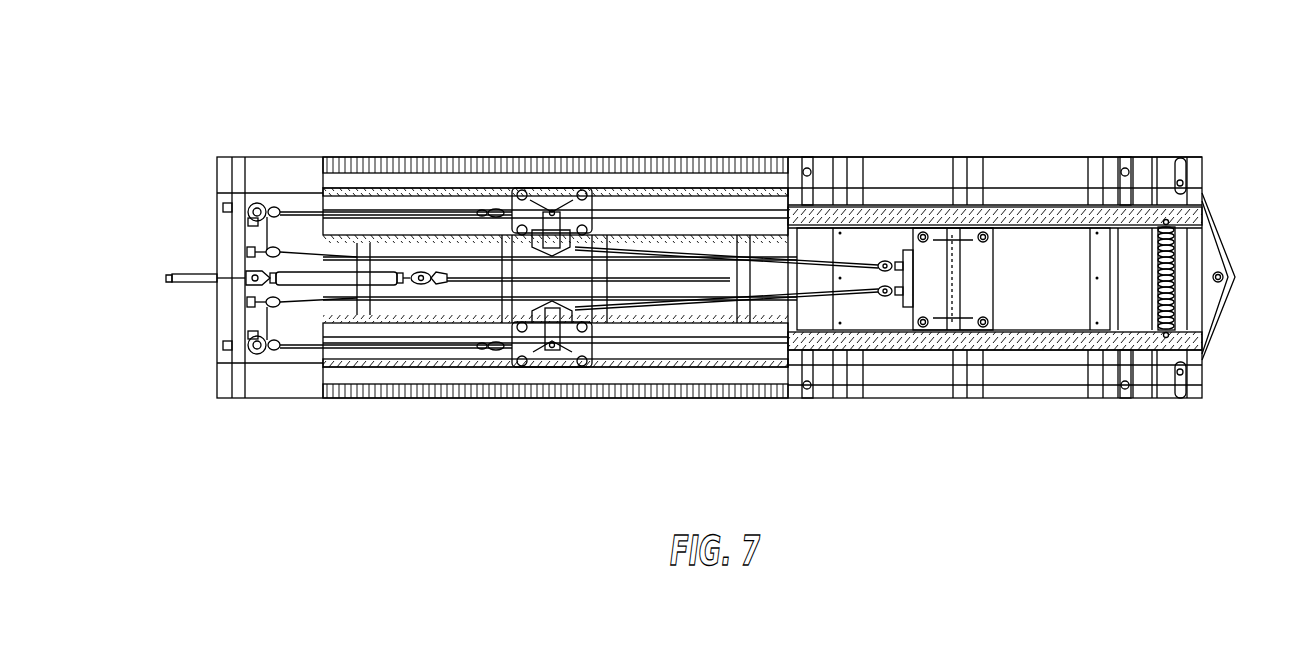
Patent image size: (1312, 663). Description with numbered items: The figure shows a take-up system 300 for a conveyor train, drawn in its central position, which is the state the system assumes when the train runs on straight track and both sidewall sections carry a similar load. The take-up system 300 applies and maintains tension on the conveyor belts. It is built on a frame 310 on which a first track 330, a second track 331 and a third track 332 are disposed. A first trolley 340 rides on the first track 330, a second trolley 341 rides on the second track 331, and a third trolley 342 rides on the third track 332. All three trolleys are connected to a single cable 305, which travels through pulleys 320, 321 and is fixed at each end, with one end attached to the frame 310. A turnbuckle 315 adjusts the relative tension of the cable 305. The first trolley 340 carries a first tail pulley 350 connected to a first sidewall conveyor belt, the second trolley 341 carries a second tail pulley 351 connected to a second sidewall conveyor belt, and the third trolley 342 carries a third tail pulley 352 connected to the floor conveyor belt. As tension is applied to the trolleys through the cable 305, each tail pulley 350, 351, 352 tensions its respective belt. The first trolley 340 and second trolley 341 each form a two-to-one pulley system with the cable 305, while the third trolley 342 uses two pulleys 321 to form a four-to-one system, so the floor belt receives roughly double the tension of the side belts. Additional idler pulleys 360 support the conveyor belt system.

The take-up system 300 is at (1173, 70).
The cable 305 is at (274, 206).
The frame 310 is at (900, 172).
The turnbuckle 315 is at (337, 276).
The pulleys 320 is at (247, 210).
The pulleys 321 is at (915, 257).
The first track 330 is at (707, 208).
The second track 331 is at (692, 350).
The third track 332 is at (1043, 247).
The first trolley 340 is at (522, 190).
The second trolley 341 is at (550, 343).
The third trolley 342 is at (970, 250).
The first tail pulley 350 is at (553, 210).
The second tail pulley 351 is at (553, 340).
The third tail pulley 352 is at (952, 310).
The idler pulleys 360 is at (1167, 222).